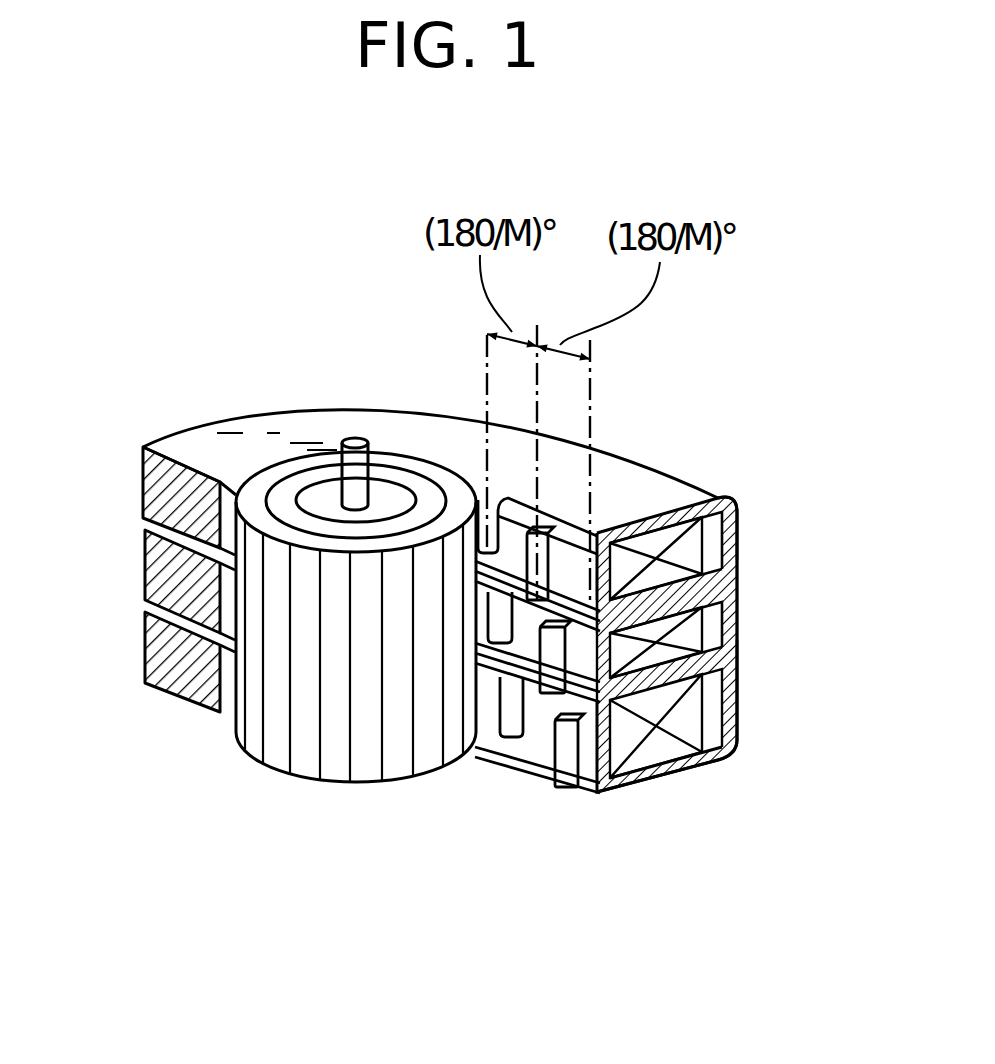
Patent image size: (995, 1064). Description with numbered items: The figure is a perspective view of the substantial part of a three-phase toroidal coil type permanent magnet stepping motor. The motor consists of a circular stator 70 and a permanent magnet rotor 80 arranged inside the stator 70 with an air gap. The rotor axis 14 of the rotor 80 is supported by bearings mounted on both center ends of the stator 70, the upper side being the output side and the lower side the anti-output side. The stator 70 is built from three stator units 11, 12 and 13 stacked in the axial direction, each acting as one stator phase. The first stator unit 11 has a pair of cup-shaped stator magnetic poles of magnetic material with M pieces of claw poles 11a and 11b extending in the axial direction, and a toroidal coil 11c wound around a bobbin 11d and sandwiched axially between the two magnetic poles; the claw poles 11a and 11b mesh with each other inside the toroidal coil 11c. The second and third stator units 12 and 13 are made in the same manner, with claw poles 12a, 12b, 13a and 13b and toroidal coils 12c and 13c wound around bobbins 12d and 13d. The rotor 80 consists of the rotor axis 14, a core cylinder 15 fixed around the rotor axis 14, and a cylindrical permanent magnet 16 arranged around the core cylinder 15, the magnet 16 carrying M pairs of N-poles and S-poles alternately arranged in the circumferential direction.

The stator 70 is at (196, 412).
The permanent magnet rotor 80 is at (276, 797).
The first stator unit 11 is at (163, 500).
The second stator unit 12 is at (163, 567).
The third stator unit 13 is at (163, 653).
The rotor axis 14 is at (355, 440).
The core cylinder 15 is at (412, 490).
The cylindrical permanent magnet 16 is at (255, 497).
The claw pole 11a is at (577, 510).
The claw pole 11b is at (550, 533).
The toroidal coil 11c is at (684, 553).
The bobbin 11d is at (682, 503).
The claw pole 12a is at (498, 627).
The claw pole 12b is at (545, 660).
The toroidal coil 12c is at (684, 653).
The bobbin 12d is at (706, 650).
The claw pole 13a is at (508, 723).
The claw pole 13b is at (562, 757).
The toroidal coil 13c is at (684, 730).
The bobbin 13d is at (662, 770).